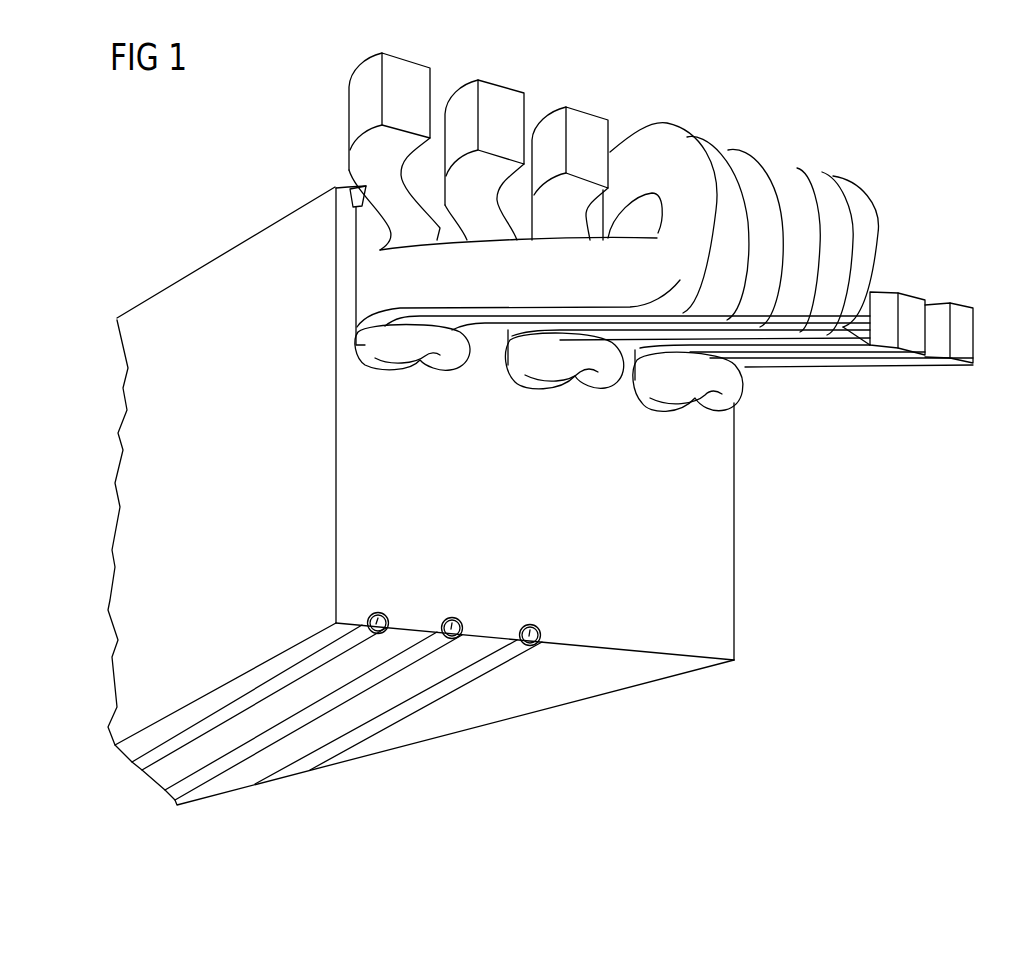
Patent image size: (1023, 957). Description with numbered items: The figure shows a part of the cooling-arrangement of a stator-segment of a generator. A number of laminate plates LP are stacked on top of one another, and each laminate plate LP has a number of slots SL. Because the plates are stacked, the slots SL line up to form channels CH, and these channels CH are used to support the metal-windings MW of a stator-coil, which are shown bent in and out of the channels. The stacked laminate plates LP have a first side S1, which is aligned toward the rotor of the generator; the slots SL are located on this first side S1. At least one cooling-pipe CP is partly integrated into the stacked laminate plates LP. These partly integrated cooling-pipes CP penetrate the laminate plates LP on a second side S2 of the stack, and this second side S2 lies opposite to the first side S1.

The laminate plate LP is at (217, 267).
The first side S1 is at (182, 192).
The second side S2 is at (710, 732).
The cooling-pipe CP is at (388, 612).
The channel CH is at (332, 168).
The slot SL is at (320, 244).
The metal-winding MW is at (650, 98).